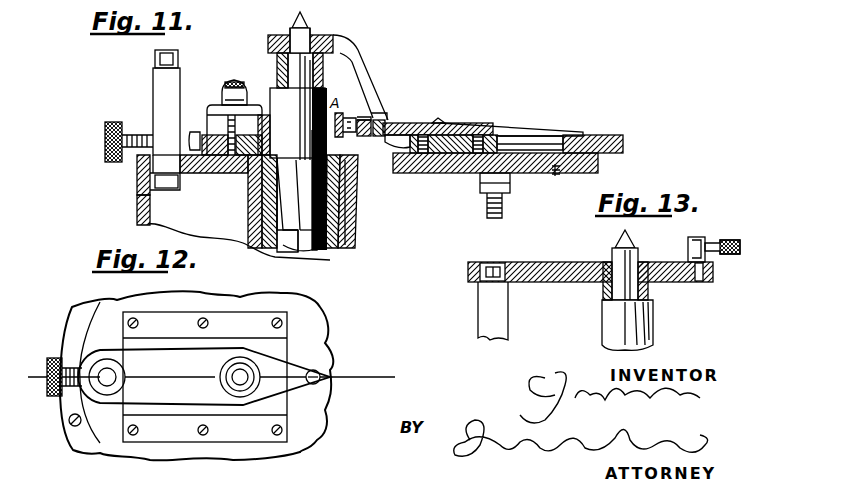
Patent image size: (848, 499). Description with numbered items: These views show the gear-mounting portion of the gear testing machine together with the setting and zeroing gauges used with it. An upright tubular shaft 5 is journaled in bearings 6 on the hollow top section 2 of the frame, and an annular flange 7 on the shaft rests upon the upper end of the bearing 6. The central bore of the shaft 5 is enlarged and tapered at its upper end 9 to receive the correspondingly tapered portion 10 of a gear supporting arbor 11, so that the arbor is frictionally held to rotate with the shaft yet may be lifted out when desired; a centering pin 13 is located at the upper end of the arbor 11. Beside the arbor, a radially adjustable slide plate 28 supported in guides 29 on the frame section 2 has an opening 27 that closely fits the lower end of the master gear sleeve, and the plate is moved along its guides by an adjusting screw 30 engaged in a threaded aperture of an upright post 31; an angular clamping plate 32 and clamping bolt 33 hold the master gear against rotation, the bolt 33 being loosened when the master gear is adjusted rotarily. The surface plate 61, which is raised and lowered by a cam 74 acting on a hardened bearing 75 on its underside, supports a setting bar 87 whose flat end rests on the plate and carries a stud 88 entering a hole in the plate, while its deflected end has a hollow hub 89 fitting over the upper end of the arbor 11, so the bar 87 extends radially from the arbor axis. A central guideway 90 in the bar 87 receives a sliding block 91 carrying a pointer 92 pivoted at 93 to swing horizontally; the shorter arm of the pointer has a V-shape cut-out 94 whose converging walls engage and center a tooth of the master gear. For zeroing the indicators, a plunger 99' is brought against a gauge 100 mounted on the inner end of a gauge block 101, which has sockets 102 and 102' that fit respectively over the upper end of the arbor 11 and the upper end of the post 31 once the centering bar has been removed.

In FIG. 11, the hollow top section 2 is at (137, 207).
In FIG. 12, the hollow top section 2 is at (310, 318).
In FIG. 11, the upright tubular shaft 5 is at (326, 250).
In FIG. 11, the bearings 6 is at (248, 218).
In FIG. 11, the annular enlargement or flange 7 is at (345, 170).
In FIG. 11, the tapered upper end of bore 9 is at (356, 202).
In FIG. 11, the tapered portion of arbor 10 is at (297, 205).
In FIG. 11, the gear supporting arbor 11 is at (294, 70).
In FIG. 12, the gear supporting arbor 11 is at (254, 372).
In FIG. 13, the gear supporting arbor 11 is at (643, 288).
In FIG. 12, the centering pin 13 is at (210, 384).
In FIG. 11, the opening in slide plate 27 is at (270, 126).
In FIG. 12, the slide plate 28 is at (177, 407).
In FIG. 12, the guides 29 is at (233, 333).
In FIG. 11, the adjusting screw 30 is at (105, 143).
In FIG. 12, the adjusting screw 30 is at (52, 358).
In FIG. 11, the upright post 31 is at (156, 93).
In FIG. 12, the upright post 31 is at (96, 388).
In FIG. 13, the upright post 31 is at (478, 311).
In FIG. 11, the angular clamping plate 32 is at (211, 105).
In FIG. 11, the clamping bolt 33 is at (232, 80).
In FIG. 11, the surface plate 61 is at (597, 170).
In FIG. 11, the cam 74 is at (502, 210).
In FIG. 11, the hardened bearing 75 is at (480, 190).
In FIG. 11, the bearing bar 87 is at (623, 144).
In FIG. 11, the stud 88 is at (557, 177).
In FIG. 11, the hollow hub 89 is at (322, 63).
In FIG. 11, the central guideway 90 is at (534, 140).
In FIG. 11, the sliding block 91 is at (467, 130).
In FIG. 11, the pointer 92 is at (439, 120).
In FIG. 11, the pivot 93 is at (385, 117).
In FIG. 11, the V-shape cut-out 94 is at (360, 115).
In FIG. 13, the plunger 99' is at (728, 235).
In FIG. 12, the gauge 100 is at (322, 371).
In FIG. 13, the gauge 100 is at (688, 246).
In FIG. 12, the gauge block 101 is at (204, 376).
In FIG. 13, the gauge block 101 is at (541, 262).
In FIG. 13, the socket 102 is at (604, 286).
In FIG. 13, the socket 102' is at (444, 279).